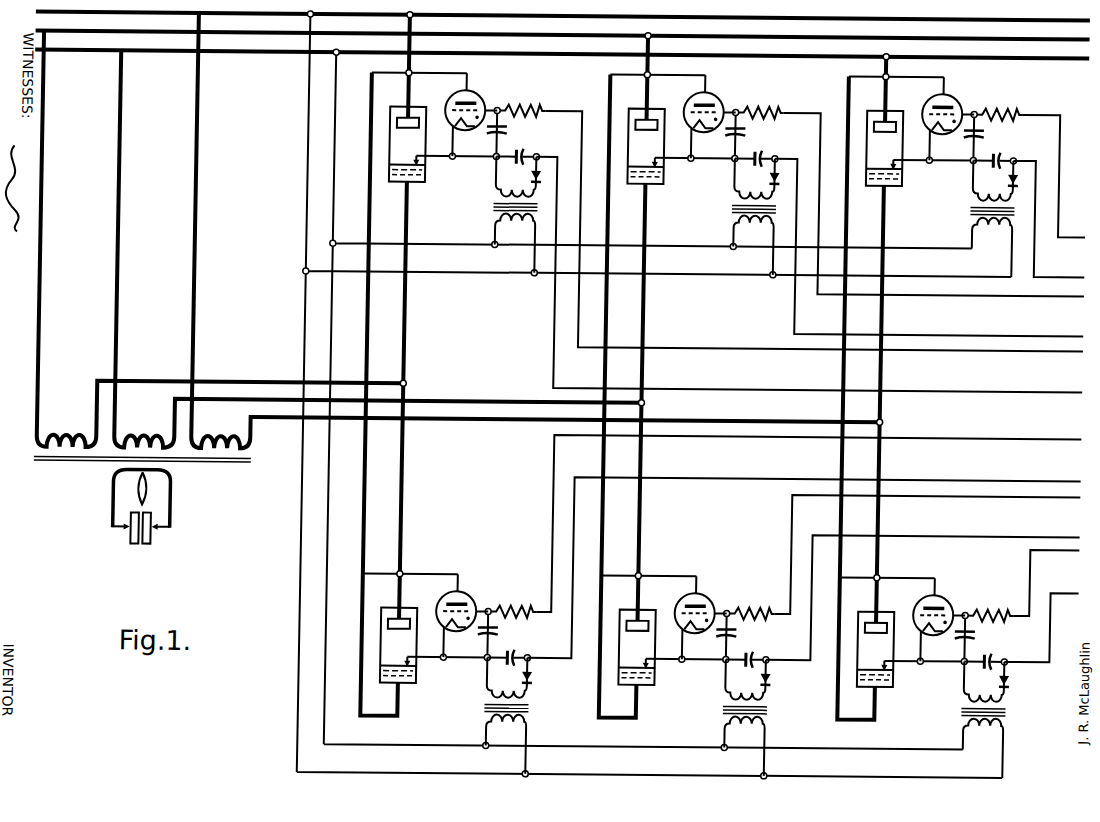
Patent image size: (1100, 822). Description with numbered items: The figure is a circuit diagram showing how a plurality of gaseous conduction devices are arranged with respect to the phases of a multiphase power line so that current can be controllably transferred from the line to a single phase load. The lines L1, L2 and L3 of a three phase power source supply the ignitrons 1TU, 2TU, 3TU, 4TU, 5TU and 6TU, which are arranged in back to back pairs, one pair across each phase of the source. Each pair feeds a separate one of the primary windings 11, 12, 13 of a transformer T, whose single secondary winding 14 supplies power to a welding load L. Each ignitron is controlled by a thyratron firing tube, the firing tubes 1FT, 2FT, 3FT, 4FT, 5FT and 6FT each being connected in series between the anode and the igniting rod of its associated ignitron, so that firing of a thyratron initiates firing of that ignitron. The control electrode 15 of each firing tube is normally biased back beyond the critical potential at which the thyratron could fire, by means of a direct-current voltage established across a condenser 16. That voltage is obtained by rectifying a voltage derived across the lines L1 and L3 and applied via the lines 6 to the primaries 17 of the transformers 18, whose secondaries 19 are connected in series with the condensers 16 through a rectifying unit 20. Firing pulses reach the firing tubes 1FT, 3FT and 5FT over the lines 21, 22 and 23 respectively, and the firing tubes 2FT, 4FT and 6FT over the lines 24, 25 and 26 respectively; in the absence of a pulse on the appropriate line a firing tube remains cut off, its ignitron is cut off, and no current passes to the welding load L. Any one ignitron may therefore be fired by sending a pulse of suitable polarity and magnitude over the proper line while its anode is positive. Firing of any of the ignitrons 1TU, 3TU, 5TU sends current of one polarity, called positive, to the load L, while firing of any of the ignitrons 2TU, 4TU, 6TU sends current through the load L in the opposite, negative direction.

The lines 6 is at (333, 229).
The primary winding 11 is at (73, 432).
The primary winding 12 is at (156, 423).
The primary winding 13 is at (231, 423).
The secondary winding 14 is at (159, 519).
The control electrode 15 is at (704, 367).
The condenser 16 is at (518, 152).
The primary 17 is at (492, 222).
The transformer 18 is at (552, 219).
The secondary 19 is at (490, 191).
The rectifying unit 20 is at (755, 428).
The line 21 is at (550, 158).
The line 22 is at (788, 158).
The line 23 is at (1028, 160).
The line 24 is at (1073, 437).
The line 25 is at (1070, 494).
The line 26 is at (1073, 548).
The welding load L is at (149, 548).
The line L1 is at (93, 19).
The line L2 is at (93, 36).
The line L3 is at (95, 57).
The transformer T is at (449, 244).
The thyratron firing tube 1FT is at (474, 99).
The thyratron firing tube 2FT is at (474, 600).
The thyratron firing tube 3FT is at (712, 99).
The thyratron firing tube 4FT is at (712, 600).
The thyratron firing tube 5FT is at (951, 99).
The thyratron firing tube 6FT is at (951, 600).
The ignitron 1TU is at (410, 184).
The ignitron 2TU is at (410, 685).
The ignitron 3TU is at (648, 184).
The ignitron 4TU is at (648, 685).
The ignitron 5TU is at (887, 184).
The ignitron 6TU is at (887, 685).